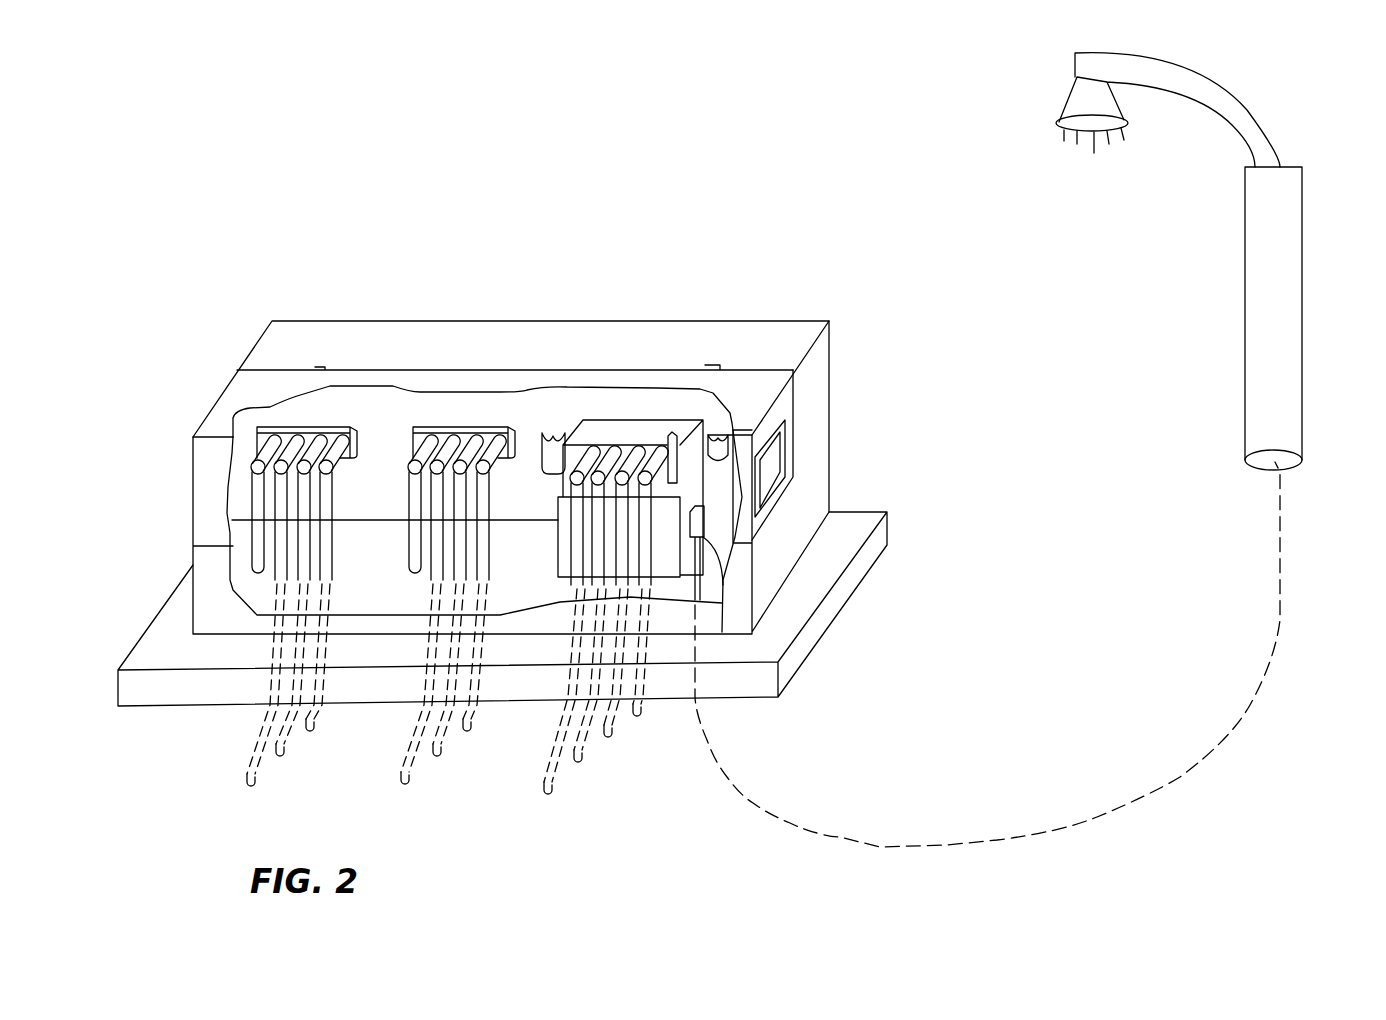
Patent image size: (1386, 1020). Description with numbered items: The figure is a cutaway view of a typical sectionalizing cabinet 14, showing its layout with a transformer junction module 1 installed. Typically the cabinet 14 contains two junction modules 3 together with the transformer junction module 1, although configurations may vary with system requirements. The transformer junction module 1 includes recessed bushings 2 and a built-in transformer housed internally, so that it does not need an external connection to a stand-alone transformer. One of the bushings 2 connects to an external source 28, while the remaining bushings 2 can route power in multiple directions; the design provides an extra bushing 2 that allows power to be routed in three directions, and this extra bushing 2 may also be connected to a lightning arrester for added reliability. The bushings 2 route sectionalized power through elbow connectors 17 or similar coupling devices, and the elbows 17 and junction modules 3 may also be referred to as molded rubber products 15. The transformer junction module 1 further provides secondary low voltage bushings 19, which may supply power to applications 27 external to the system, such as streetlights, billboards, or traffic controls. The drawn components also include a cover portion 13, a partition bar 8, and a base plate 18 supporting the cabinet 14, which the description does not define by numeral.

The transformer junction module 1 is at (692, 433).
The bushings 2 is at (590, 450).
The junction modules 3 is at (420, 427).
The partition bar 8 is at (672, 432).
The cover 13 is at (742, 395).
The sectionalizing cabinet 14 is at (792, 337).
The molded rubber products 15 is at (290, 445).
The elbow connectors 17 is at (545, 433).
The base plate 18 is at (475, 713).
The secondary low voltage bushings 19 is at (725, 570).
The applications 27 is at (1295, 290).
The external source 28 is at (547, 805).